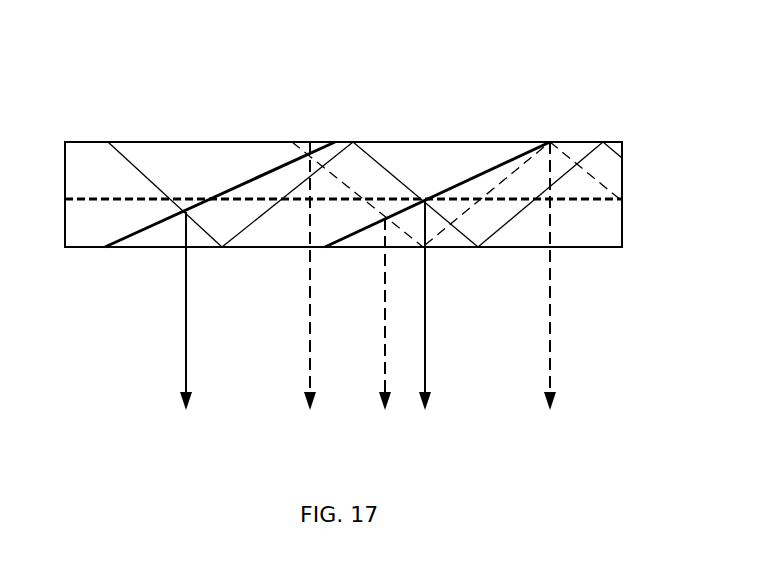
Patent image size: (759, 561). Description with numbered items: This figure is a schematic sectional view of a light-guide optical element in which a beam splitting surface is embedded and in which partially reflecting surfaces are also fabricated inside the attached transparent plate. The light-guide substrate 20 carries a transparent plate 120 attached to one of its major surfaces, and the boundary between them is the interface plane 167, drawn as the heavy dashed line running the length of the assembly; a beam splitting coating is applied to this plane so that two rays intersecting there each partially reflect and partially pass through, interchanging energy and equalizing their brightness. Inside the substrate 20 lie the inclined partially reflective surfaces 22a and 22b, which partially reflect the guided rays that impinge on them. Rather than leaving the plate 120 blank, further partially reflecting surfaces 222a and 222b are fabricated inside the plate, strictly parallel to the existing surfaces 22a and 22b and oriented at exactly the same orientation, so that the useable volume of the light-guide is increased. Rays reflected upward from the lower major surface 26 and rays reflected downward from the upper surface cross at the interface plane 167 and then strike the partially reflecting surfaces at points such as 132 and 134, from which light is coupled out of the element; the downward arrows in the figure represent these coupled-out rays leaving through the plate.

The light-guide optical element (substrate) 20 is at (87, 180).
The partially reflective surface 22a is at (503, 162).
The partially reflective surface 22b is at (273, 163).
The lower major surface 26 is at (580, 248).
The transparent plate 120 is at (147, 235).
The point 132 is at (356, 148).
The point 134 is at (308, 150).
The interface plane 167 is at (110, 202).
The partially reflecting surface 222a is at (400, 218).
The partially reflecting surface 222b is at (200, 210).